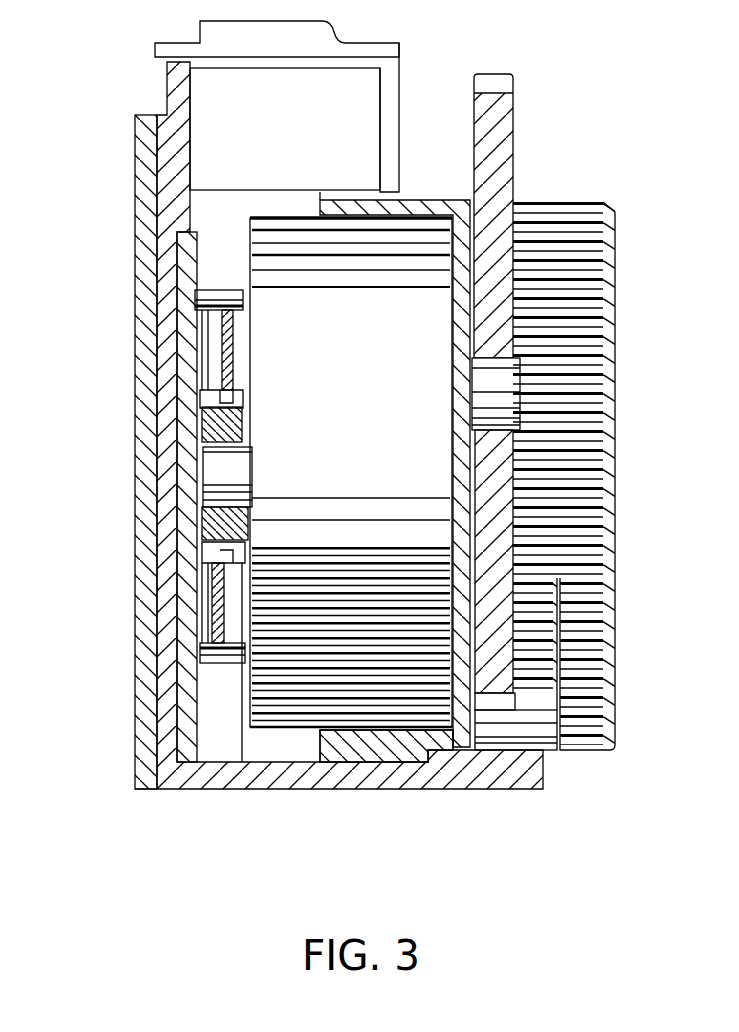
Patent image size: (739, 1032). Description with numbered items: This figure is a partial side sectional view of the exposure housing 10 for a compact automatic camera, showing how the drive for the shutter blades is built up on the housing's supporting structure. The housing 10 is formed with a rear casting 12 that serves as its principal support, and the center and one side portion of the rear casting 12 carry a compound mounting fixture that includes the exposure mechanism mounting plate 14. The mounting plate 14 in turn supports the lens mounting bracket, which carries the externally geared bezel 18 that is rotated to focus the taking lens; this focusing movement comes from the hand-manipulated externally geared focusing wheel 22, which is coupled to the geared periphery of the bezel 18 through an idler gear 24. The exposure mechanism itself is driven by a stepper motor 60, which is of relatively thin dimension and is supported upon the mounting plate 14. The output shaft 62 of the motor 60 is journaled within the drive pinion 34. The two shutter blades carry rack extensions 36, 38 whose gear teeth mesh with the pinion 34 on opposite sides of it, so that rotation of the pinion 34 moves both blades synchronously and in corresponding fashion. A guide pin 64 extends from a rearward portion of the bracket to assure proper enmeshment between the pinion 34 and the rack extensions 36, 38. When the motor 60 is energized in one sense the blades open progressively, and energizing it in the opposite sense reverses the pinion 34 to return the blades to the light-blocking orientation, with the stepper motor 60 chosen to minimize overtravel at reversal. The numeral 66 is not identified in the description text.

The exposure housing 10 is at (104, 128).
The rear casting 12 is at (253, 768).
The exposure mechanism mounting plate 14 is at (373, 742).
The externally geared bezel 18 is at (590, 203).
The focusing wheel 22 is at (508, 117).
The idler gear 24 is at (524, 735).
The drive pinion 34 is at (227, 425).
The rack extension 36 is at (216, 302).
The rack extension 38 is at (227, 668).
The stepper motor 60 is at (393, 243).
The output shaft 62 is at (228, 468).
The guide pin 64 is at (190, 265).
The bearing housing 66 is at (205, 655).